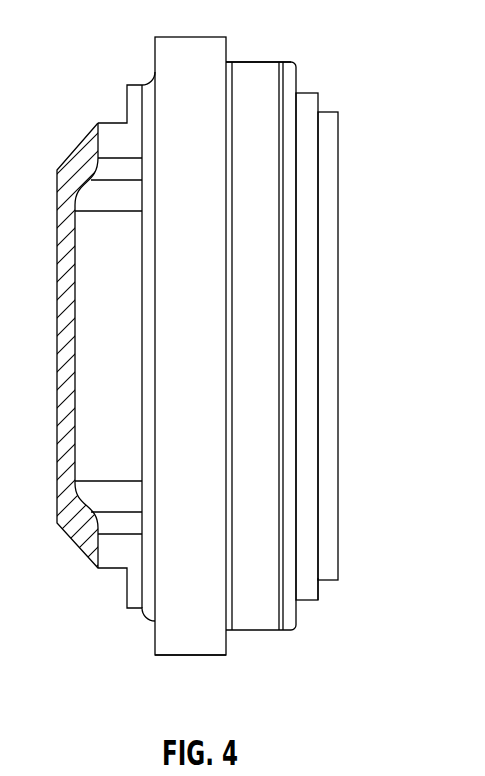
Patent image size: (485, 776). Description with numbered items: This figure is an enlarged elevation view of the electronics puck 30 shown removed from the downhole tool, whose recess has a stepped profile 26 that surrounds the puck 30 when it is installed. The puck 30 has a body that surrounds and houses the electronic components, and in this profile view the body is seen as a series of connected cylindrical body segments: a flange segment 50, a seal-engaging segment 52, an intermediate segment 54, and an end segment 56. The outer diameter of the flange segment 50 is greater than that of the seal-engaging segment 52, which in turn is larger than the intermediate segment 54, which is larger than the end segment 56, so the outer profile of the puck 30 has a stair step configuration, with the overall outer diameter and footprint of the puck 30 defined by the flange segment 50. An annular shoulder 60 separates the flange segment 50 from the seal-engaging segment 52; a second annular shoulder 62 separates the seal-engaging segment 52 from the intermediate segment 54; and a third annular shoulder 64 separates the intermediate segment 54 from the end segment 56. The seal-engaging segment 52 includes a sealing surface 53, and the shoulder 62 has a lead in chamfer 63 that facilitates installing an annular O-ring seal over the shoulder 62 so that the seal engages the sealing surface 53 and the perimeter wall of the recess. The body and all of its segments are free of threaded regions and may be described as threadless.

The stepped profile 26 is at (259, 56).
The puck 30 is at (112, 567).
The flange segment 50 is at (193, 657).
The seal-engaging segment 52 is at (248, 622).
The sealing surface 53 is at (192, 36).
The intermediate segment 54 is at (307, 540).
The end segment 56 is at (328, 552).
The annular shoulder 60 is at (231, 645).
The second annular shoulder 62 is at (298, 618).
The lead in chamfer 63 is at (288, 623).
The third annular shoulder 64 is at (320, 588).